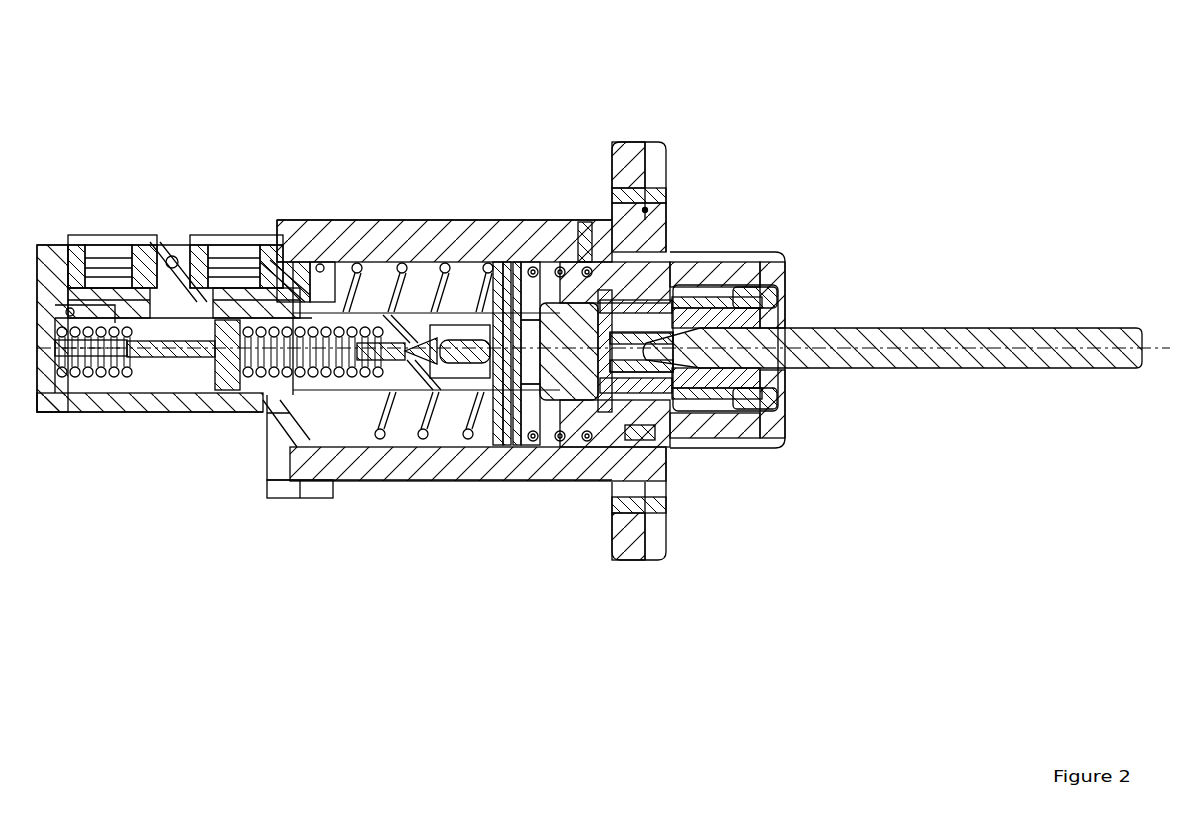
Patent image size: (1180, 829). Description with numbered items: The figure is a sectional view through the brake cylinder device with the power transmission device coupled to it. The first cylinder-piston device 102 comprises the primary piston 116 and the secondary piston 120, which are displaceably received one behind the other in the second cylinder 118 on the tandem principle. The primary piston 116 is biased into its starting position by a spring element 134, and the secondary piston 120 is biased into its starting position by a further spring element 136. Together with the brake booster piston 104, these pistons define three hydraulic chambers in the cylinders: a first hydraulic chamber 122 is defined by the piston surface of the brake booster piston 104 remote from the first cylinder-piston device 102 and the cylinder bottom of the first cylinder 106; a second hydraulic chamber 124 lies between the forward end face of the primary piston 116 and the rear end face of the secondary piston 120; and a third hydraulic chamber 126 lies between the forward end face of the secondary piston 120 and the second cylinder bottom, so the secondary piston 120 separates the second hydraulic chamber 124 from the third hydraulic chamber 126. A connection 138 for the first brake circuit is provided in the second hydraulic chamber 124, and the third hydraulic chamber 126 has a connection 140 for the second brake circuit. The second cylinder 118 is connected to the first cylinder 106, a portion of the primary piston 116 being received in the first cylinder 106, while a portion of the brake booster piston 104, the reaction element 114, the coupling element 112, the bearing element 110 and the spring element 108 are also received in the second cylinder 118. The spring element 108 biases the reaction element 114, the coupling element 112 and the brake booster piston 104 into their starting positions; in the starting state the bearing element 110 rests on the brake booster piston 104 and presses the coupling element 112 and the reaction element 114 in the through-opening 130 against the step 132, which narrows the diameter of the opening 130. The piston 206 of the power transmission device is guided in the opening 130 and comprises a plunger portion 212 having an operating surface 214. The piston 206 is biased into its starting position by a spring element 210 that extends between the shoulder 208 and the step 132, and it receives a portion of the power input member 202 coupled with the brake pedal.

The first cylinder-piston device 102 is at (603, 178).
The brake booster piston 104 is at (727, 314).
The first cylinder 106 is at (466, 313).
The spring element 108 is at (418, 284).
The bearing element 110 is at (518, 437).
The coupling element 112 is at (511, 416).
The reaction element 114 is at (556, 426).
The primary piston 116 is at (465, 296).
The second cylinder 118 is at (174, 279).
The secondary piston 120 is at (220, 406).
The first hydraulic chamber 122 is at (587, 438).
The second hydraulic chamber 124 is at (306, 215).
The third hydraulic chamber 126 is at (184, 233).
The through-opening 130 is at (426, 283).
The step 132 is at (593, 184).
The spring element 134 is at (191, 403).
The further spring element 136 is at (87, 395).
The connection 138 is at (250, 225).
The connection 140 is at (112, 222).
The power input member 202 is at (892, 292).
The piston 206 is at (668, 334).
The shoulder 208 is at (688, 285).
The spring element 210 is at (667, 439).
The plunger portion 212 is at (534, 290).
The operating surface 214 is at (507, 295).